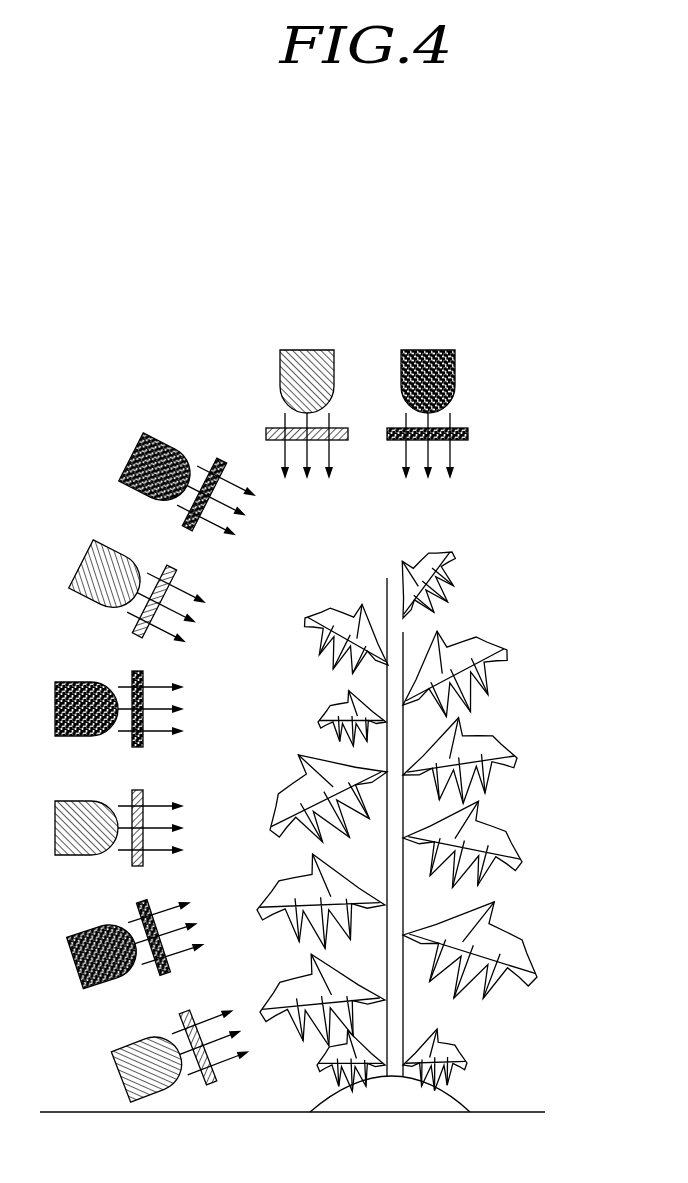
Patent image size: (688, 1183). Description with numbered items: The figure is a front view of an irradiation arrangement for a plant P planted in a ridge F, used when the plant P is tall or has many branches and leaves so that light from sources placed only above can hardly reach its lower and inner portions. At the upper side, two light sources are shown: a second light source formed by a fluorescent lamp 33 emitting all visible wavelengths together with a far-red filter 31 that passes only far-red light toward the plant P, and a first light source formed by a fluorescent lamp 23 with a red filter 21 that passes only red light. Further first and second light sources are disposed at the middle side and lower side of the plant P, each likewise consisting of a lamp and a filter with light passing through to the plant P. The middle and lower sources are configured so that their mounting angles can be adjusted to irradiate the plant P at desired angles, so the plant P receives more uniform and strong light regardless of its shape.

The fluorescent lamp 33 is at (308, 352).
The far-red filter 31 is at (267, 427).
The fluorescent lamp 23 is at (430, 350).
The red filter 21 is at (467, 427).
The plant P is at (487, 823).
The ridge F is at (440, 1098).